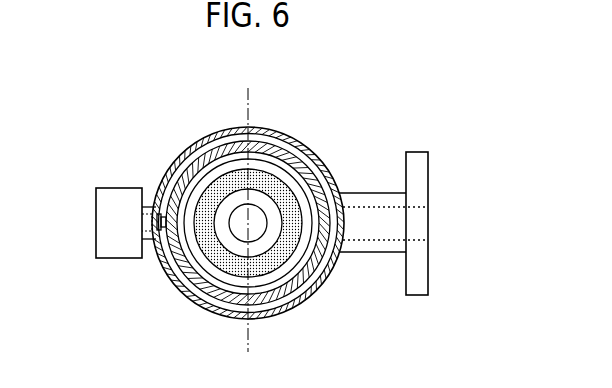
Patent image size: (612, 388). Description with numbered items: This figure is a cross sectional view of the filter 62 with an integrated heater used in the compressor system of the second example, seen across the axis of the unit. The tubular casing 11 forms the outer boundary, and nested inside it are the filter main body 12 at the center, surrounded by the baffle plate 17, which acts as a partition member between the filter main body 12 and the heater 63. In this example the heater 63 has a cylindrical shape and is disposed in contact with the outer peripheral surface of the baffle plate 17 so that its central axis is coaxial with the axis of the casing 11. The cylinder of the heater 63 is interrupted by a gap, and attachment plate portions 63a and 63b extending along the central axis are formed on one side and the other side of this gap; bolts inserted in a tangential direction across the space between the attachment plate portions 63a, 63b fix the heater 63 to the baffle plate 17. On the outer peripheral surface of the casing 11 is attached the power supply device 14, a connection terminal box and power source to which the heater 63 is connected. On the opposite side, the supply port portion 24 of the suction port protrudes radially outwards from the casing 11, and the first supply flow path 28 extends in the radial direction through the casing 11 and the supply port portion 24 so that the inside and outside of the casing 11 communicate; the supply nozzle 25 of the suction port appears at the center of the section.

The casing 11 is at (337, 172).
The filter main body 12 is at (275, 188).
The power supply device 14 is at (105, 215).
The baffle plate 17 is at (267, 157).
The supply port portion 24 is at (420, 173).
The supply nozzle 25 is at (254, 224).
The first supply flow path 28 is at (410, 207).
The filter with an integrated heater 62 is at (405, 108).
The heater 63 is at (185, 172).
The attachment plate portion 63a is at (159, 257).
The attachment plate portion 63b is at (160, 208).